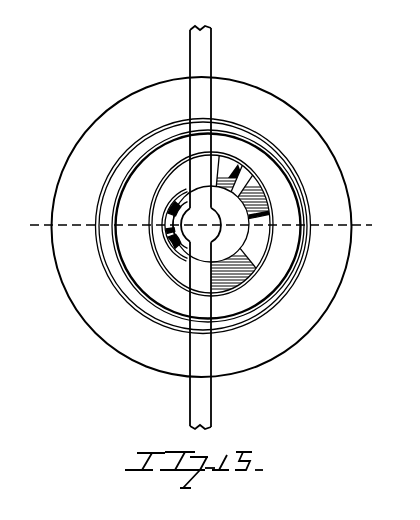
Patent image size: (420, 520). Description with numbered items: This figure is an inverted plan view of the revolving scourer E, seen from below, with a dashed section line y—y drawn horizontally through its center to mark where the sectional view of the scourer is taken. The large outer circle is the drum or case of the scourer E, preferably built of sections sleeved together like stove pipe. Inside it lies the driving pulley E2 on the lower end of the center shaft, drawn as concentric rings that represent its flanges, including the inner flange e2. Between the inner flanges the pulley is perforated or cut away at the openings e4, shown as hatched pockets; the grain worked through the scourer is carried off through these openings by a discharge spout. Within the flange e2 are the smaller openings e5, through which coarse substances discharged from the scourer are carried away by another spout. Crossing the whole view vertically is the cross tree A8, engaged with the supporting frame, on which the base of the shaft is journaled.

The revolving scourer E is at (207, 227).
The driving pulley E2 is at (207, 226).
The inner flange e2 is at (216, 224).
The openings e4 is at (226, 222).
The openings e5 is at (186, 250).
The cross tree A8 is at (218, 399).
The section line y- y is at (199, 227).